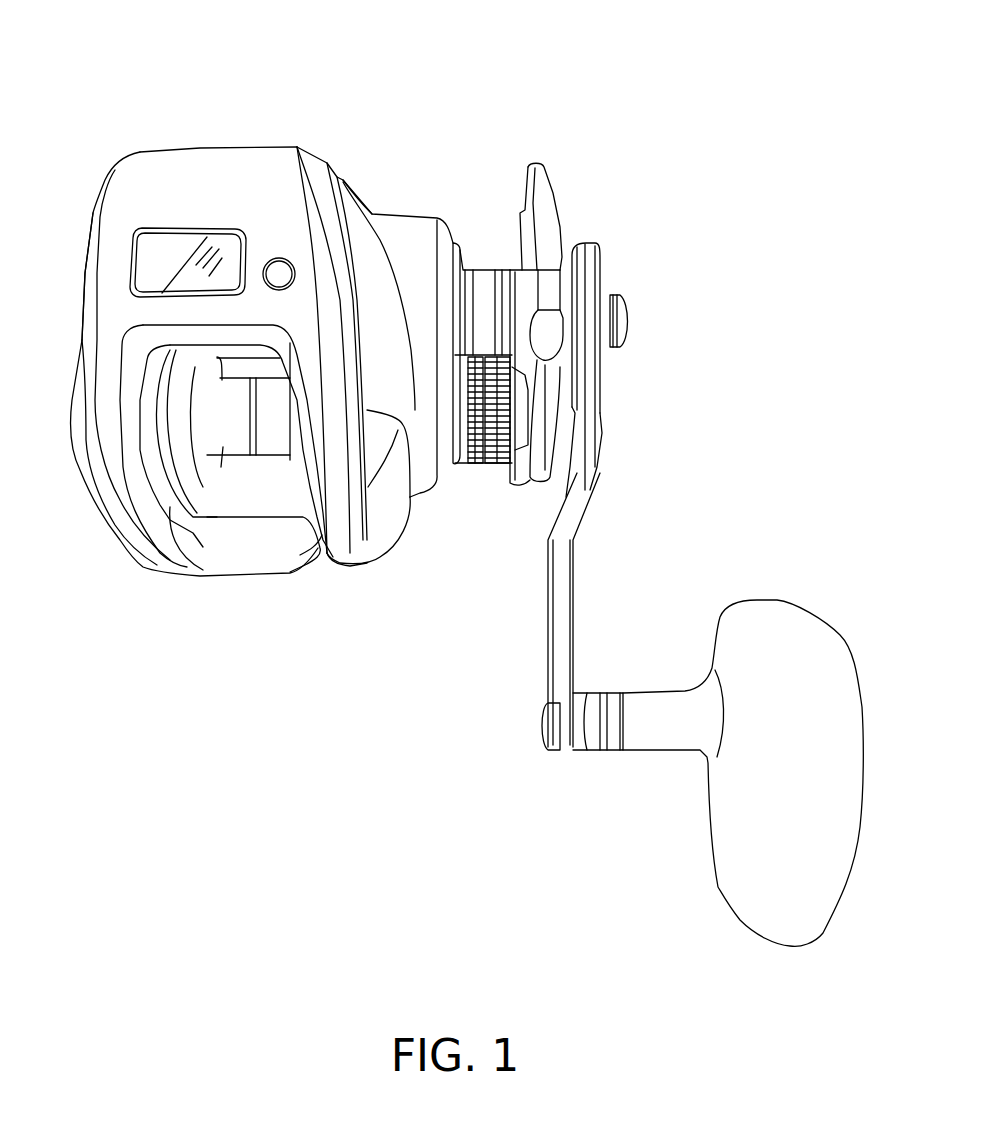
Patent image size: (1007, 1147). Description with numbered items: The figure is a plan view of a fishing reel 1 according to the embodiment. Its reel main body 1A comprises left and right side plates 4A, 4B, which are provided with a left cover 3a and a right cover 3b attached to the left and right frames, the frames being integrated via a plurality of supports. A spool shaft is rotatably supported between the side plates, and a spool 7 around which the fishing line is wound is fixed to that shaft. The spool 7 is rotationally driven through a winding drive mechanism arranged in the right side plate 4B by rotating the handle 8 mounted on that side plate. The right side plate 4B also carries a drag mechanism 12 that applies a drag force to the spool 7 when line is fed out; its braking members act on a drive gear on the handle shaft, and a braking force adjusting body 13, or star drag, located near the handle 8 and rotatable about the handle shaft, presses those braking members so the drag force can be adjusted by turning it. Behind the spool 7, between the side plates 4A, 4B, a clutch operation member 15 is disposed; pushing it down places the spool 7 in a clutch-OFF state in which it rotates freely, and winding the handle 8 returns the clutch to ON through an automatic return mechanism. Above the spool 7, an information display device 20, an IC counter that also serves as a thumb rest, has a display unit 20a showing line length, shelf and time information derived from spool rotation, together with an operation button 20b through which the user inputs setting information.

The reel 1 is at (473, 93).
The reel main body 1A is at (344, 174).
The left cover 3a is at (92, 215).
The right cover 3b is at (395, 503).
The left side plate 4A is at (94, 158).
The right side plate 4B is at (320, 145).
The spool 7 is at (222, 440).
The handle 8 is at (772, 598).
The drag mechanism 12 is at (567, 206).
The braking force adjusting body 13 is at (537, 165).
The clutch operation member 15 is at (283, 545).
The information display device 20 is at (249, 165).
The display unit 20a is at (178, 236).
The operation button 20b is at (295, 272).